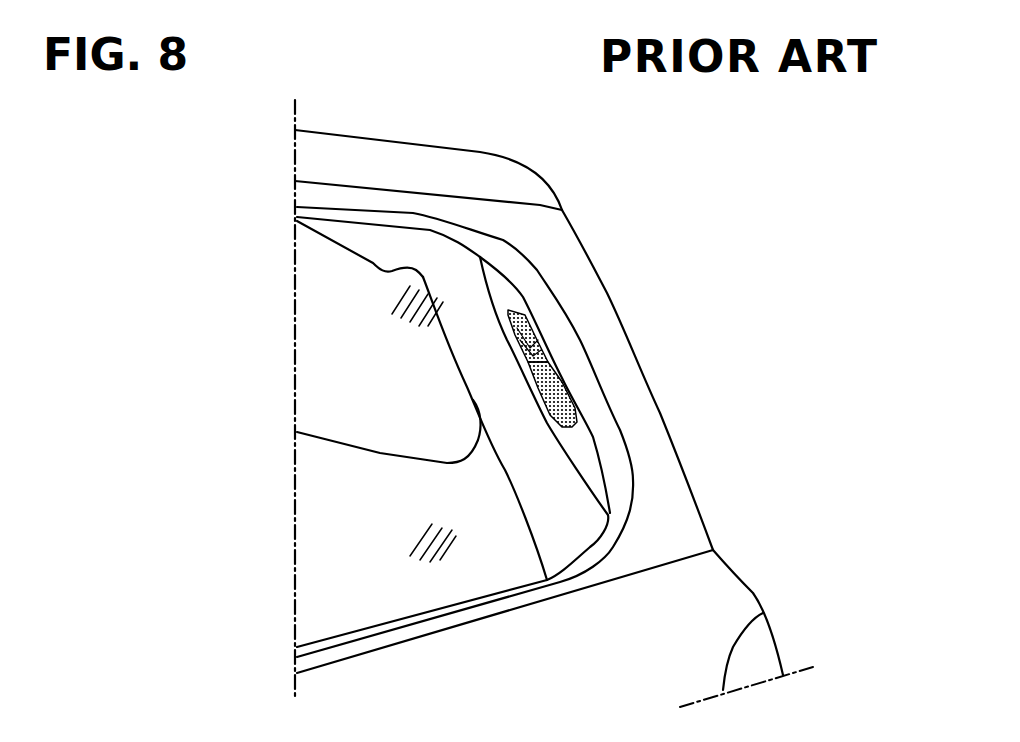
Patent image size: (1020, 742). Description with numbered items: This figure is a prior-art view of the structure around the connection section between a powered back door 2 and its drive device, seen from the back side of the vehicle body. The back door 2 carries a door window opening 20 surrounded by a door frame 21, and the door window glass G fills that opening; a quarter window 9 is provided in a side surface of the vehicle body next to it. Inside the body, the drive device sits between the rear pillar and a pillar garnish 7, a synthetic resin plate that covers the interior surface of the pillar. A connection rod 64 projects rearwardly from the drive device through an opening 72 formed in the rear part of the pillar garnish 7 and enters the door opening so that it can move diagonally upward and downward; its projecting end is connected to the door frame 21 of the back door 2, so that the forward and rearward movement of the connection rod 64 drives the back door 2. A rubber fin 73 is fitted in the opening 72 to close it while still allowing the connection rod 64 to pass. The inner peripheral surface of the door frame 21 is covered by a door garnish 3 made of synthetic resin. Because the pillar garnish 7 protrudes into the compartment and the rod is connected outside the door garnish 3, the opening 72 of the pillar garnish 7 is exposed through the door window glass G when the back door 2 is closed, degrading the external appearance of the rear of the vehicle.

The back door 2 is at (725, 557).
The door garnish 3 is at (593, 413).
The pillar garnish 7 is at (480, 348).
The quarter window 9 is at (320, 252).
The door window opening 20 is at (633, 463).
The door frame 21 is at (580, 238).
The connection rod 64 is at (540, 340).
The opening 72 is at (538, 380).
The rubber fin 73 is at (575, 382).
The door window glass G is at (393, 597).